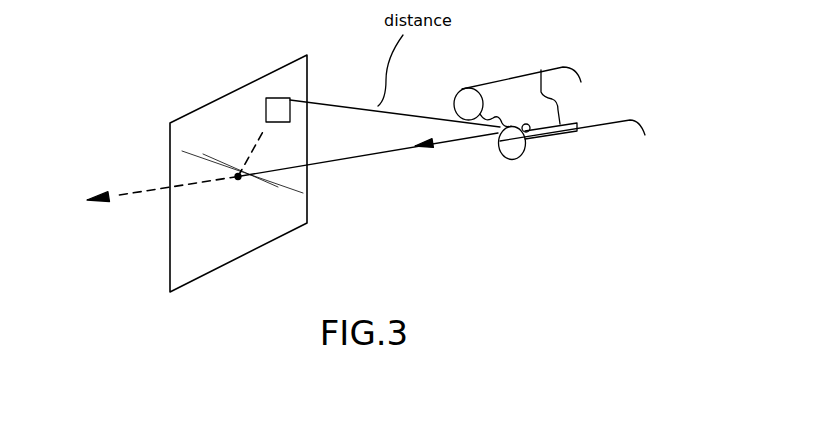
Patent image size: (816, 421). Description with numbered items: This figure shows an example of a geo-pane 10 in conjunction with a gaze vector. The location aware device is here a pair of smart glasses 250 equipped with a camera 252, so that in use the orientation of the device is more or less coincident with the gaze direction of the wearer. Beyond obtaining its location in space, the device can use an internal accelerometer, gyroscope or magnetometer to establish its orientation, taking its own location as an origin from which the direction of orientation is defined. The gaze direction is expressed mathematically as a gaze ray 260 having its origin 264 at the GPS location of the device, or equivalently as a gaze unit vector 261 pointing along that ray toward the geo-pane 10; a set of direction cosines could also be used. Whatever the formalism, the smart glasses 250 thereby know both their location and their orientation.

The display 10 is at (218, 113).
The smart glasses 250 is at (520, 160).
The camera 252 is at (541, 70).
The gaze ray 260 is at (145, 192).
The gaze unit vector 261 is at (443, 142).
The origin 264 is at (543, 138).